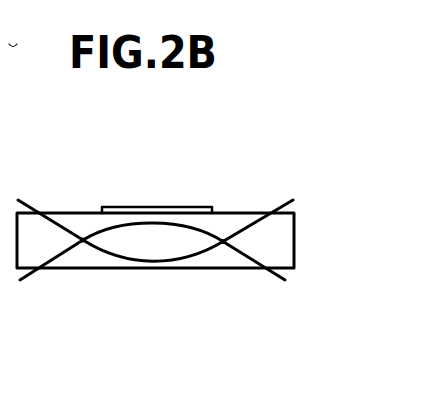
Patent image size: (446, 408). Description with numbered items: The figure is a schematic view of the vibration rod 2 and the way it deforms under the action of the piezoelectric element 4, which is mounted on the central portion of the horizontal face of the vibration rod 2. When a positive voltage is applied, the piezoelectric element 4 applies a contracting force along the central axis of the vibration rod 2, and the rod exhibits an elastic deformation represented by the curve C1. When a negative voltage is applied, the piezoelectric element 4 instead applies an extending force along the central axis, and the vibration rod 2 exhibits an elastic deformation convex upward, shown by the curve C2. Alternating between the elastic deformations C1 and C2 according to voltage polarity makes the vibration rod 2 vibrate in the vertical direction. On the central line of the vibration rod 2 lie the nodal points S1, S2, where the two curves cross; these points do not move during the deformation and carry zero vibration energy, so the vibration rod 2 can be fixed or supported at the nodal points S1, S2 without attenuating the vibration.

The vibration rod 2 is at (247, 213).
The piezoelectric element 4 is at (165, 207).
The nodal point S1 is at (83, 240).
The nodal point S2 is at (223, 242).
The elastic deformation C1 is at (278, 208).
The elastic deformation curve C2 is at (285, 280).